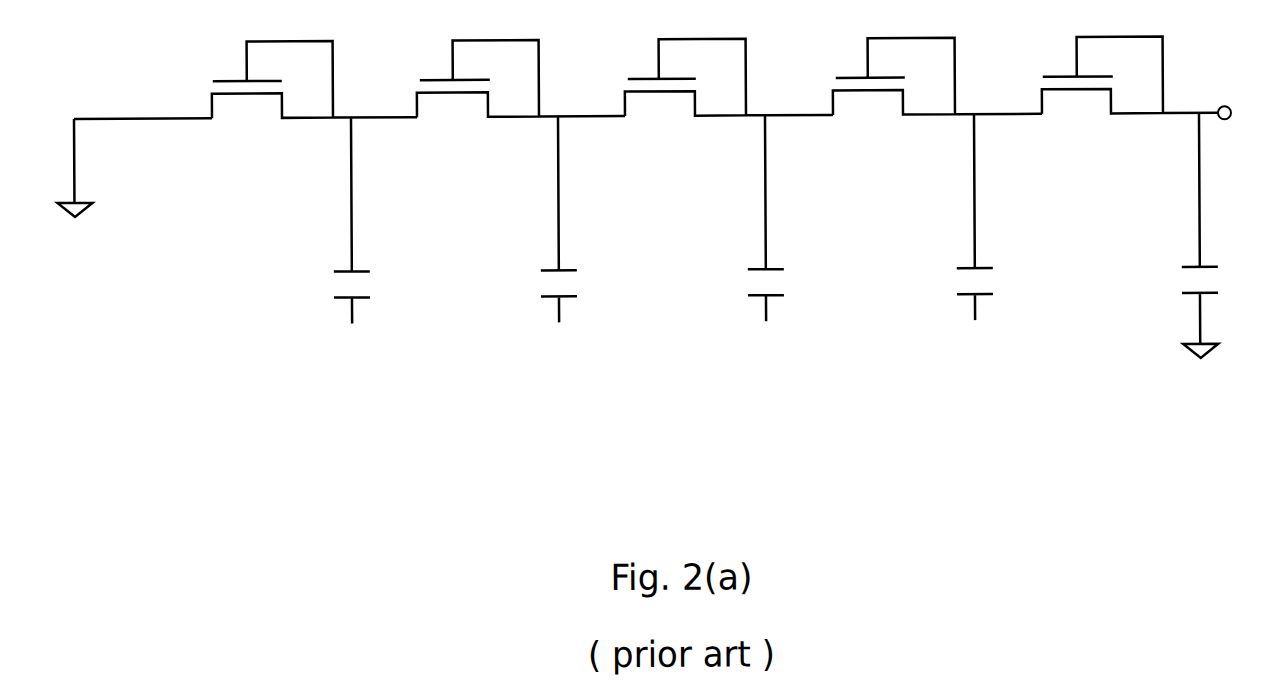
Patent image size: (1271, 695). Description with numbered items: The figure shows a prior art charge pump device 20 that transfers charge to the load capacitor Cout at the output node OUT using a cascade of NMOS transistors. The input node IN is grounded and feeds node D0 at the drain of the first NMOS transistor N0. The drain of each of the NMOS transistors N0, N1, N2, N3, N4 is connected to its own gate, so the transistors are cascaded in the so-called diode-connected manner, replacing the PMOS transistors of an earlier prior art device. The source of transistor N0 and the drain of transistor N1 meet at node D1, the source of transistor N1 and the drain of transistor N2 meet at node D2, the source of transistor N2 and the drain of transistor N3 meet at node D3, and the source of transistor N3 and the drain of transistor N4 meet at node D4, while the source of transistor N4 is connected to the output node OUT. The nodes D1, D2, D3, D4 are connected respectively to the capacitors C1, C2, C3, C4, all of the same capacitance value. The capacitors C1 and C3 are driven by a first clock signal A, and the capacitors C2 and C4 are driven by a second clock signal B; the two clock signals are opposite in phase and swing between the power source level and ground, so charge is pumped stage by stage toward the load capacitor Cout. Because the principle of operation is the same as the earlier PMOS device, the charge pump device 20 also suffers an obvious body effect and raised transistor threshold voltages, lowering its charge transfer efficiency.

The charge pump device 20 is at (653, 255).
The input node IN is at (86, 168).
The output node OUT is at (1205, 98).
The node D0 is at (143, 103).
The node D1 is at (375, 102).
The node D2 is at (582, 102).
The node D3 is at (789, 99).
The node D4 is at (998, 97).
The NMOS transistor N0 is at (273, 95).
The NMOS transistor N1 is at (478, 96).
The NMOS transistor N2 is at (686, 94).
The NMOS transistor N3 is at (894, 94).
The NMOS transistor N4 is at (1103, 91).
The capacitor C1 is at (330, 244).
The capacitor C2 is at (540, 243).
The capacitor C3 is at (747, 241).
The capacitor C4 is at (953, 240).
The load capacitor Cout is at (1166, 236).